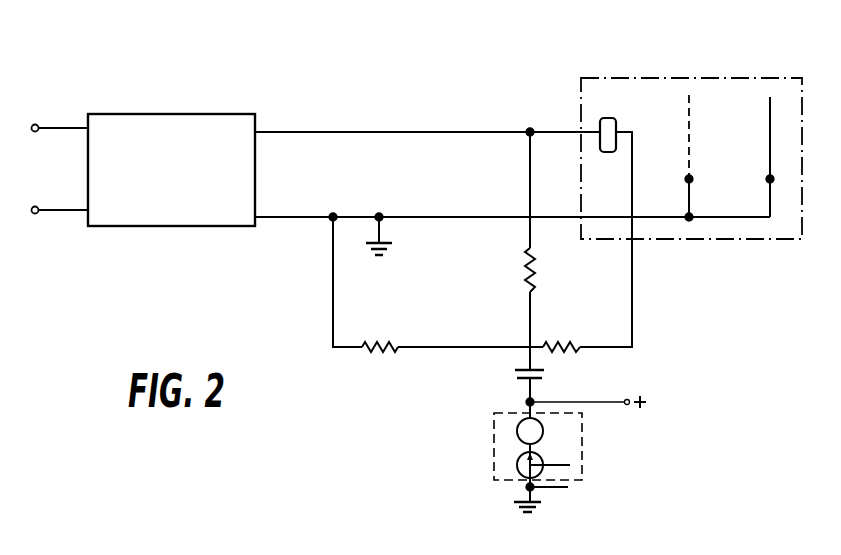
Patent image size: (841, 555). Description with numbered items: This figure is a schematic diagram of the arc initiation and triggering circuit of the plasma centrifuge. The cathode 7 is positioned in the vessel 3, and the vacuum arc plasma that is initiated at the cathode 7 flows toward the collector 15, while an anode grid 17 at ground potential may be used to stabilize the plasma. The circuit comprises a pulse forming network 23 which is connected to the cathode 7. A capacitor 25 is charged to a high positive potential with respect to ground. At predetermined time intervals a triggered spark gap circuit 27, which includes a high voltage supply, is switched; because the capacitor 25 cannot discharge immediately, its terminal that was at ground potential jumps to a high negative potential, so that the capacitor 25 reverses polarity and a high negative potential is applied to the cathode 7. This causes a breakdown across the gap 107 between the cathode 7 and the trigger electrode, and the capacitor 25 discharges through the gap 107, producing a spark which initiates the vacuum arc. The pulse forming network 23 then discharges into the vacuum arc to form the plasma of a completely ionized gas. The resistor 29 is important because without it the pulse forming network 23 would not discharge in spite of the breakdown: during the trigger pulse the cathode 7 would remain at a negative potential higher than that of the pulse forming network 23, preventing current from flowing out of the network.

The vessel 3 is at (691, 130).
The cathode 7 is at (605, 118).
The gap 107 is at (628, 130).
The collector 15 is at (768, 138).
The anode grid 17 is at (693, 127).
The pulse forming network 23 is at (238, 114).
The capacitor 25 is at (518, 368).
The triggered spark gap circuit 27 is at (582, 478).
The resistor 29 is at (537, 272).